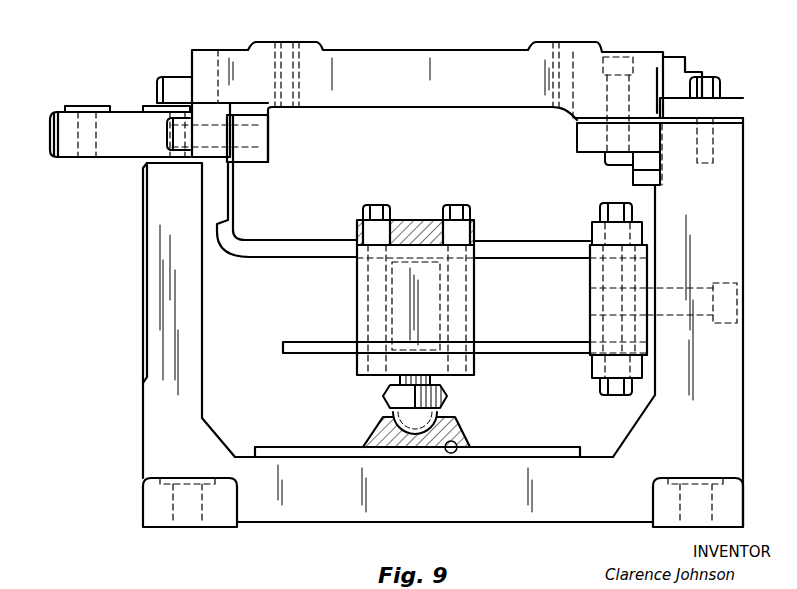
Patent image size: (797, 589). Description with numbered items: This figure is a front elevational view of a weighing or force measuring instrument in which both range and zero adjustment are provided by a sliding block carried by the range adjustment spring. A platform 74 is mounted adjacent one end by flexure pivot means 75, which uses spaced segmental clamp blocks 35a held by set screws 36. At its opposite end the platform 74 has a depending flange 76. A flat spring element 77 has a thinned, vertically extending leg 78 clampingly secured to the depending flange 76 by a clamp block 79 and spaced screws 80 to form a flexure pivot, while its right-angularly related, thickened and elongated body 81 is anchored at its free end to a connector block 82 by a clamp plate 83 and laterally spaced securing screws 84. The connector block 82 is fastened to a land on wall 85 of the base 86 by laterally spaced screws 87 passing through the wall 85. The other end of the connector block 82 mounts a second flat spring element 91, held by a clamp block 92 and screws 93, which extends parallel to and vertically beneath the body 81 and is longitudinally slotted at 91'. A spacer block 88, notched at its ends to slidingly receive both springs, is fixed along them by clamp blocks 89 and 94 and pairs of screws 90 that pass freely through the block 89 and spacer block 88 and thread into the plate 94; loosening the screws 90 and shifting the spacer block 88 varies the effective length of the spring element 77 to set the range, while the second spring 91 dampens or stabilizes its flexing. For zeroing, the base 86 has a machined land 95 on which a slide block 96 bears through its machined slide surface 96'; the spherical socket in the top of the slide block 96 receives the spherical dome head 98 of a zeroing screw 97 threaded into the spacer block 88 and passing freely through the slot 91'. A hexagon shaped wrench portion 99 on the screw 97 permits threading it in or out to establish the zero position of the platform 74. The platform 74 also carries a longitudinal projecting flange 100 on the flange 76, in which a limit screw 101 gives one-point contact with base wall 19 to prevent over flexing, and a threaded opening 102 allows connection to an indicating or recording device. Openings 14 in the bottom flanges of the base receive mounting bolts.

The laterally spaced openings 14 is at (178, 520).
The upstanding support wall 19 is at (158, 270).
The segmental clamp blocks 35a is at (735, 108).
The set screws 36 is at (725, 82).
The platform 74 is at (430, 48).
The flexure pivot means 75 is at (708, 55).
The depending flange 76 is at (213, 158).
The flat spring element 77 is at (306, 238).
The vertically extending leg 78 is at (234, 190).
The clamp block 79 is at (270, 124).
The screws 80 is at (168, 134).
The body 81 is at (537, 242).
The connector block 82 is at (590, 275).
The clamp plate 83 is at (592, 230).
The securing screws 84 is at (612, 204).
The wall 85 is at (745, 222).
The base 86 is at (545, 522).
The screws 87 is at (738, 296).
The spacer block 88 is at (477, 292).
The clamp block 89 is at (432, 222).
The screws 90 is at (377, 205).
The second flat spring element 91 is at (436, 337).
The longitudinal slot 91' is at (592, 367).
The clamp block 92 is at (598, 370).
The screws 93 is at (610, 396).
The clamp block 94 is at (357, 373).
The land 95 is at (268, 447).
The slide block 96 is at (427, 425).
The slide surface 96' is at (476, 439).
The zeroing screw 97 is at (400, 370).
The spherical dome head 98 is at (438, 404).
The hexagon shaped wrench portion 99 is at (390, 402).
The projecting flange 100 is at (62, 157).
The limit screw 101 is at (165, 78).
The threaded opening 102 is at (100, 106).